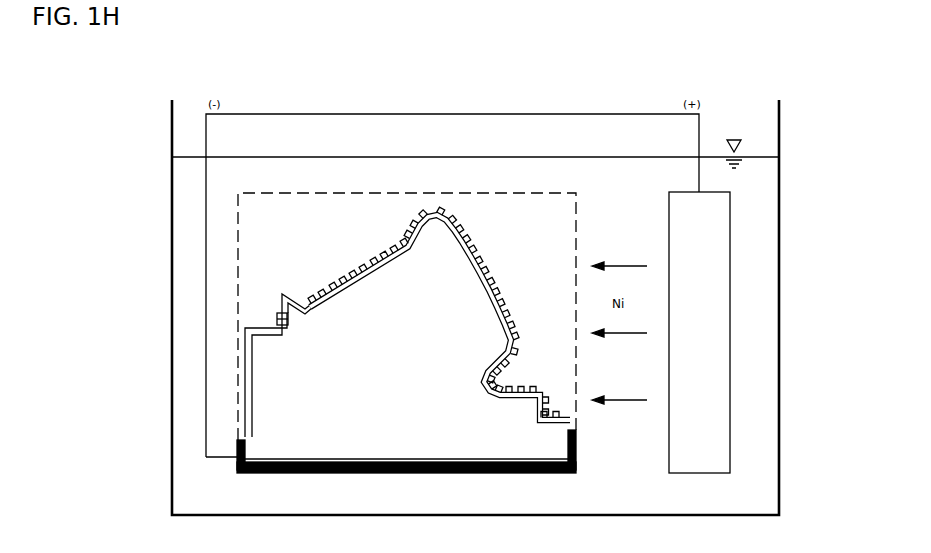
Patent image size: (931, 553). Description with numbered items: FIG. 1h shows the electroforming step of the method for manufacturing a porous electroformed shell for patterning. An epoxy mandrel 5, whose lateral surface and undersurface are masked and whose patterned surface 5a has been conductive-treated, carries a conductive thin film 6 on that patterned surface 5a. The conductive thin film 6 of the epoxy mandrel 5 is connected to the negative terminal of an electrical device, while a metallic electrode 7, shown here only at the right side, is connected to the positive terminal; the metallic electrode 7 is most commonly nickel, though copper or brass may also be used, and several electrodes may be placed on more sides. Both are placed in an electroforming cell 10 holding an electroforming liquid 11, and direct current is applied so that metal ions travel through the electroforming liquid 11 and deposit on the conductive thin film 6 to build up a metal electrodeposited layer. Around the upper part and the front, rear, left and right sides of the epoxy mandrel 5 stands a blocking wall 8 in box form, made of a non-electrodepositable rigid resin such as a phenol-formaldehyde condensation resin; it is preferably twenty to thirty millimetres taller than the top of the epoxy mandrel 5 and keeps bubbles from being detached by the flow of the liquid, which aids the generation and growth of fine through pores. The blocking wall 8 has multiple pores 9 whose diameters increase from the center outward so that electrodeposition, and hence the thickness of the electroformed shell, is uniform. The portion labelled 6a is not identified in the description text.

The epoxy mandrel 5 is at (397, 444).
The patterned surface 5a is at (368, 272).
The conductive thin film 6 is at (486, 268).
The mold recess 6a is at (510, 318).
The metallic electrode 7 is at (700, 429).
The blocking wall 8 is at (238, 233).
The pores 9 is at (238, 343).
The electroforming cell 10 is at (780, 327).
The electroforming liquid 11 is at (755, 216).